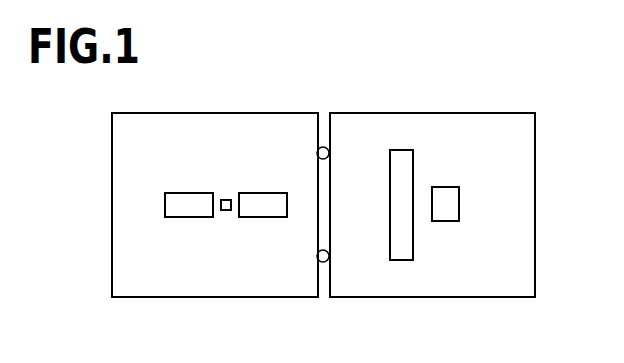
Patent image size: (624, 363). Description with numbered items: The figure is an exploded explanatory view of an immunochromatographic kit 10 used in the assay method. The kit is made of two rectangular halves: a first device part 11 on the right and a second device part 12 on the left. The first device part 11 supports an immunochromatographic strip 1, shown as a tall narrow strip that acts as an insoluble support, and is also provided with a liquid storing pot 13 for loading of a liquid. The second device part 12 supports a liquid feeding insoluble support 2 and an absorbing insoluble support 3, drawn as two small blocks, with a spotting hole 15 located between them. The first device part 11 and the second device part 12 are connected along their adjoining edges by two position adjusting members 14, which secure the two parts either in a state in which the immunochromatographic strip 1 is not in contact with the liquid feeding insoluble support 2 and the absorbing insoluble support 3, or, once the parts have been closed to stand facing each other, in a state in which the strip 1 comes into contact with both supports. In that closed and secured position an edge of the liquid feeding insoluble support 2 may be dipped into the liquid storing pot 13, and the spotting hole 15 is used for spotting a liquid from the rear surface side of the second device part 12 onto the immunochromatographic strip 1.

The immunochromatographic kit 10 is at (355, 86).
The second device part 12 is at (222, 298).
The first device part 11 is at (434, 298).
The liquid feeding insoluble support 2 is at (191, 200).
The spotting hole 15 is at (226, 200).
The absorbing insoluble support 3 is at (265, 200).
The position adjusting member 14 is at (329, 153).
The immunochromatographic strip 1 is at (407, 244).
The liquid storing pot 13 is at (445, 193).